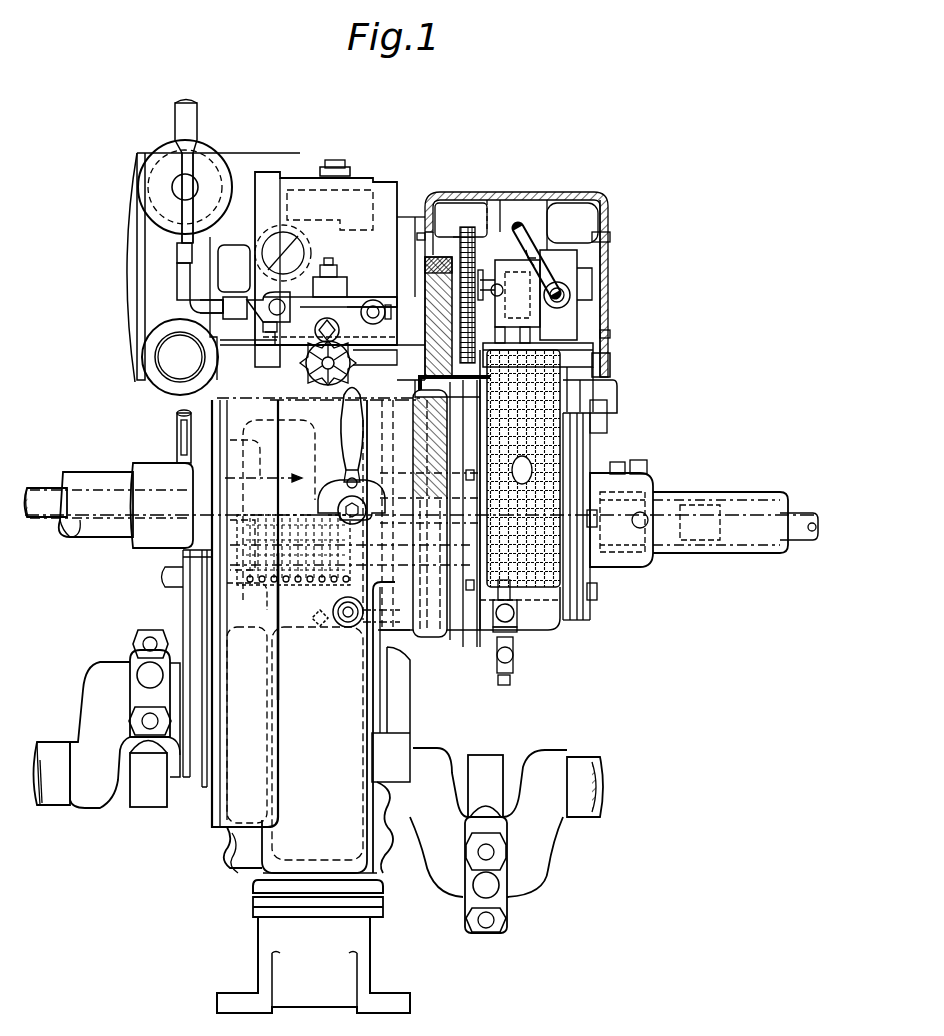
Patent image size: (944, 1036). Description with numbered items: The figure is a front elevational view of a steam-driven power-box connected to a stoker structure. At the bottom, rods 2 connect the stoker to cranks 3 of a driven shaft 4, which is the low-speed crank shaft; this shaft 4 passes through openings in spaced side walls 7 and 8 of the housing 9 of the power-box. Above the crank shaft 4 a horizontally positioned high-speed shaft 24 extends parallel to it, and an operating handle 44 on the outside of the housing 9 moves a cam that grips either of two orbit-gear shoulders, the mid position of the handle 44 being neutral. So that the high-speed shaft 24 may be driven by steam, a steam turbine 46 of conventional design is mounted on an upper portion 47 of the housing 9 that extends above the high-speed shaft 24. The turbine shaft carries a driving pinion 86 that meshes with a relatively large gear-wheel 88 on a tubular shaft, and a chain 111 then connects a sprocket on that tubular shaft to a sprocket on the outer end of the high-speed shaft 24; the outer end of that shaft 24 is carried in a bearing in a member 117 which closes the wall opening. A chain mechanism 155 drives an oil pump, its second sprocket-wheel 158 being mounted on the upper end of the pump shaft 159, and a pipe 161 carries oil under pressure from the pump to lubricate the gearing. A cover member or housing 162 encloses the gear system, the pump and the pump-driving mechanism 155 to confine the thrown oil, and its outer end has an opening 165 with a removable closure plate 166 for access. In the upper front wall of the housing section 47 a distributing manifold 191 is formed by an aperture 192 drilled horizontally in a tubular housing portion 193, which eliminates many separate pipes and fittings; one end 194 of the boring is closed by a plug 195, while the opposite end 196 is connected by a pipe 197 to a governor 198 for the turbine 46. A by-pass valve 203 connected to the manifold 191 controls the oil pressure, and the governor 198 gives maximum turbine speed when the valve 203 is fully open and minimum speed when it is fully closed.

The governor 198 is at (210, 172).
The steam turbine 46 is at (163, 282).
The pipe 197 is at (172, 298).
The opposite end of the aperture 196 is at (268, 335).
The upper portion of the housing 47 is at (278, 384).
The aperture 192 is at (317, 311).
The distributing manifold 191 is at (355, 300).
The plug 195 is at (385, 322).
The one end of the aperture 194 is at (340, 332).
The tubular housing portion 193 is at (312, 370).
The gear-wheel 88 is at (345, 348).
The by-pass valve 203 is at (318, 394).
The operating handle 44 is at (350, 410).
The driving pinion 86 is at (440, 255).
The second sprocket-wheel 158 is at (478, 219).
The shaft of the pump 159 is at (492, 243).
The pipe 161 is at (507, 305).
The cover member or housing 162 is at (567, 200).
The opening 165 is at (612, 258).
The chain mechanism 155 is at (583, 282).
The removable closure plate 166 is at (613, 312).
The chain 111 is at (590, 580).
The member 117 is at (640, 560).
The high-speed shaft 24 is at (60, 508).
The cranks 3 is at (100, 672).
The driven shaft 4 is at (58, 800).
The rods 2 is at (157, 800).
The side wall 7 is at (267, 838).
The side wall 8 is at (363, 857).
The housing 9 is at (332, 940).